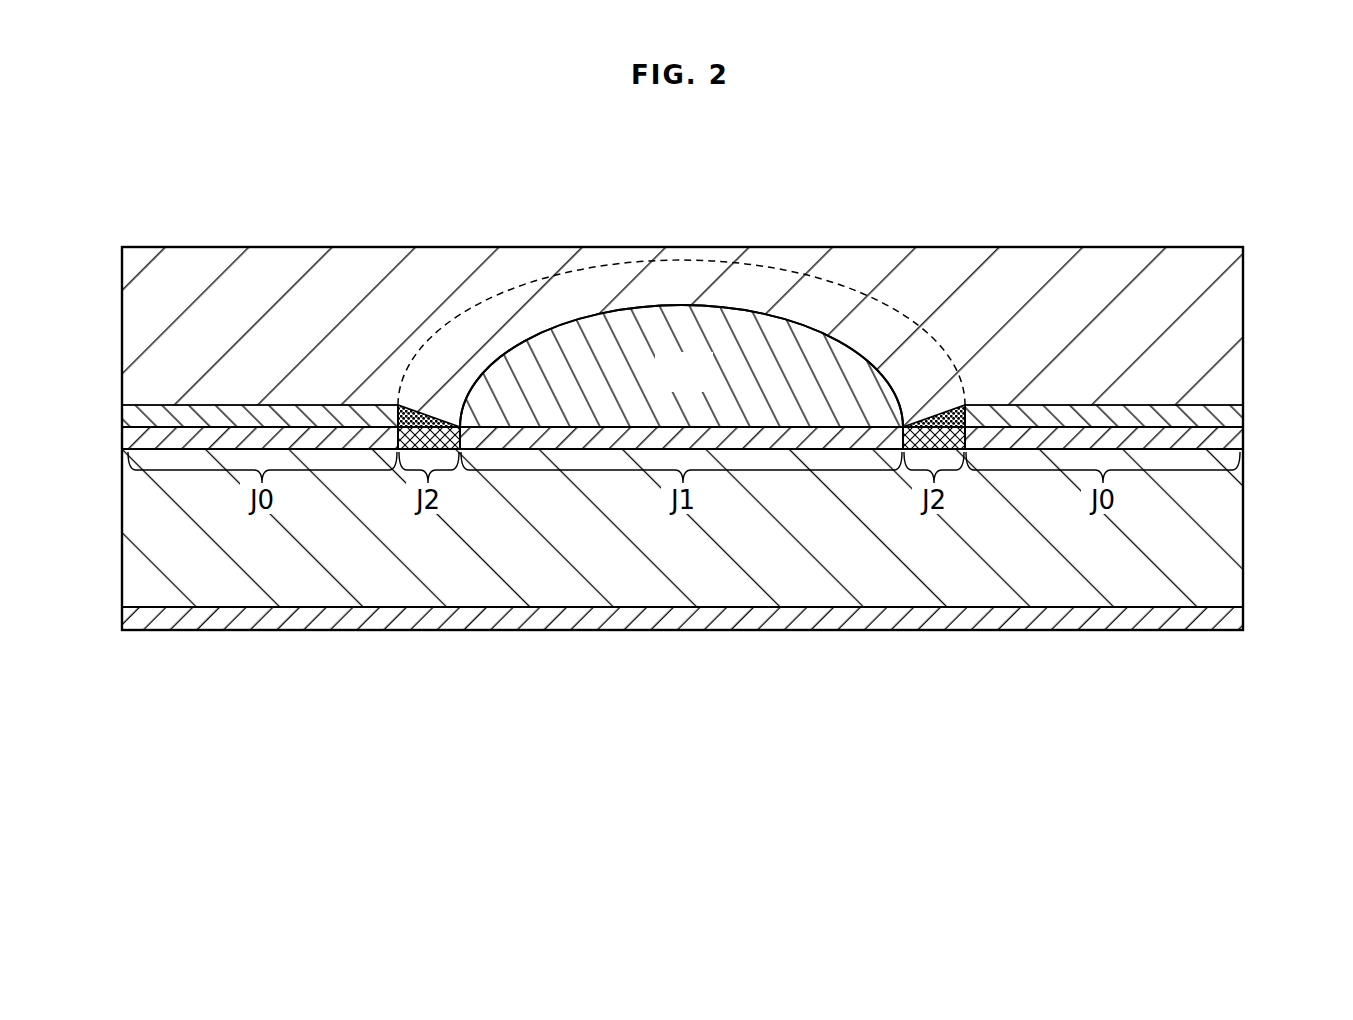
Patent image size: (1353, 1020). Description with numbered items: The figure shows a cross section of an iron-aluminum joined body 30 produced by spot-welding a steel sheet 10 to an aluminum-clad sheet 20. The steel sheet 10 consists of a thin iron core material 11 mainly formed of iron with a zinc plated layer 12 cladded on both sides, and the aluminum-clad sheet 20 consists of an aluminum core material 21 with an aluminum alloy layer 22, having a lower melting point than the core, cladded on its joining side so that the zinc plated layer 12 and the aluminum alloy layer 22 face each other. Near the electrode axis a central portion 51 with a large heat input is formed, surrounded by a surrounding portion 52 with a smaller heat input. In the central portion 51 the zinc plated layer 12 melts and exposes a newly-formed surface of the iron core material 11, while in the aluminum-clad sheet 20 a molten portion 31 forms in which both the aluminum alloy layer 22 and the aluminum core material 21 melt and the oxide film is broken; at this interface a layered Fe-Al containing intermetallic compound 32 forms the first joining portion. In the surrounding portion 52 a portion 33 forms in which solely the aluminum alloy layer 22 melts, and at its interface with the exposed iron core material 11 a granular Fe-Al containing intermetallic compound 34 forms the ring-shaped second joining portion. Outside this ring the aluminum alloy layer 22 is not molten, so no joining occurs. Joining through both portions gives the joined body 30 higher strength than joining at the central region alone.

The steel sheet 10 is at (1262, 576).
The iron core material 11 is at (1228, 530).
The zinc plated layer 12 is at (133, 437).
The aluminum-clad sheet 20 is at (1262, 272).
The aluminum core material 21 is at (1228, 321).
The aluminum alloy layer 22 is at (133, 413).
The iron-aluminum joined body 30 is at (190, 180).
The molten portion 31 is at (663, 388).
The layered Fe-Al containing intermetallic compound 32 is at (630, 424).
The portion where solely the aluminum alloy layer is molten 33 is at (442, 424).
The granular Fe-Al containing intermetallic compound 34 is at (445, 446).
The central portion 51 is at (750, 300).
The surrounding portion 52 is at (857, 272).